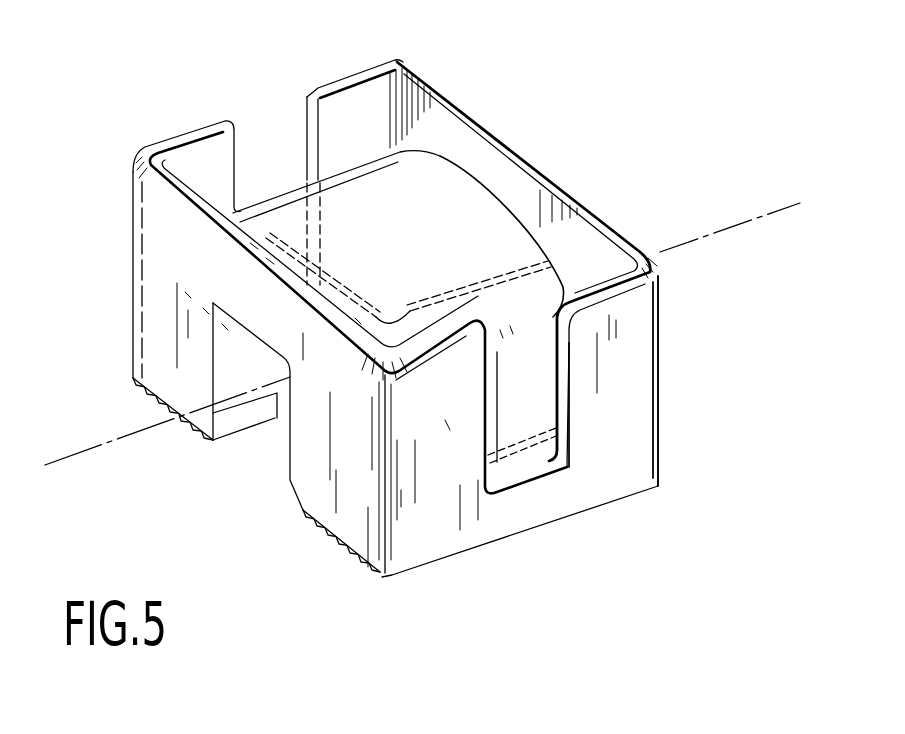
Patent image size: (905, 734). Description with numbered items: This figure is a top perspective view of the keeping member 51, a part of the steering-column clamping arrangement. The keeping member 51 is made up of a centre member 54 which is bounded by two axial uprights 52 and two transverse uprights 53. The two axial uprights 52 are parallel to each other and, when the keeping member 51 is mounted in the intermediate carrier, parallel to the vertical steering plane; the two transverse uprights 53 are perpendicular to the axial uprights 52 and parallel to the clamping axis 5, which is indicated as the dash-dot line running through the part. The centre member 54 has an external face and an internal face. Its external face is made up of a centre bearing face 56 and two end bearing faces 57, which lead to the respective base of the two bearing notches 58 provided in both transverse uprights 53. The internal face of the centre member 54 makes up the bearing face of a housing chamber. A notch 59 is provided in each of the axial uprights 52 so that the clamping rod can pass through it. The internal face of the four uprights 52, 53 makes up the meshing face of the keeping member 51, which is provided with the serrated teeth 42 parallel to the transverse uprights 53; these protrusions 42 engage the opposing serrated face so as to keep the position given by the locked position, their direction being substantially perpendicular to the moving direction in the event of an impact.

The clamping axis 5 is at (76, 452).
The serrated protrusions 42 is at (333, 545).
The keeping member 51 is at (607, 180).
The axial uprights 52 is at (484, 122).
The transverse uprights 53 is at (366, 110).
The centre member 54 is at (404, 215).
The centre bearing face 56 is at (467, 232).
The end bearing faces 57 is at (270, 283).
The bearing notches 58 is at (236, 158).
The notch 59 is at (288, 433).